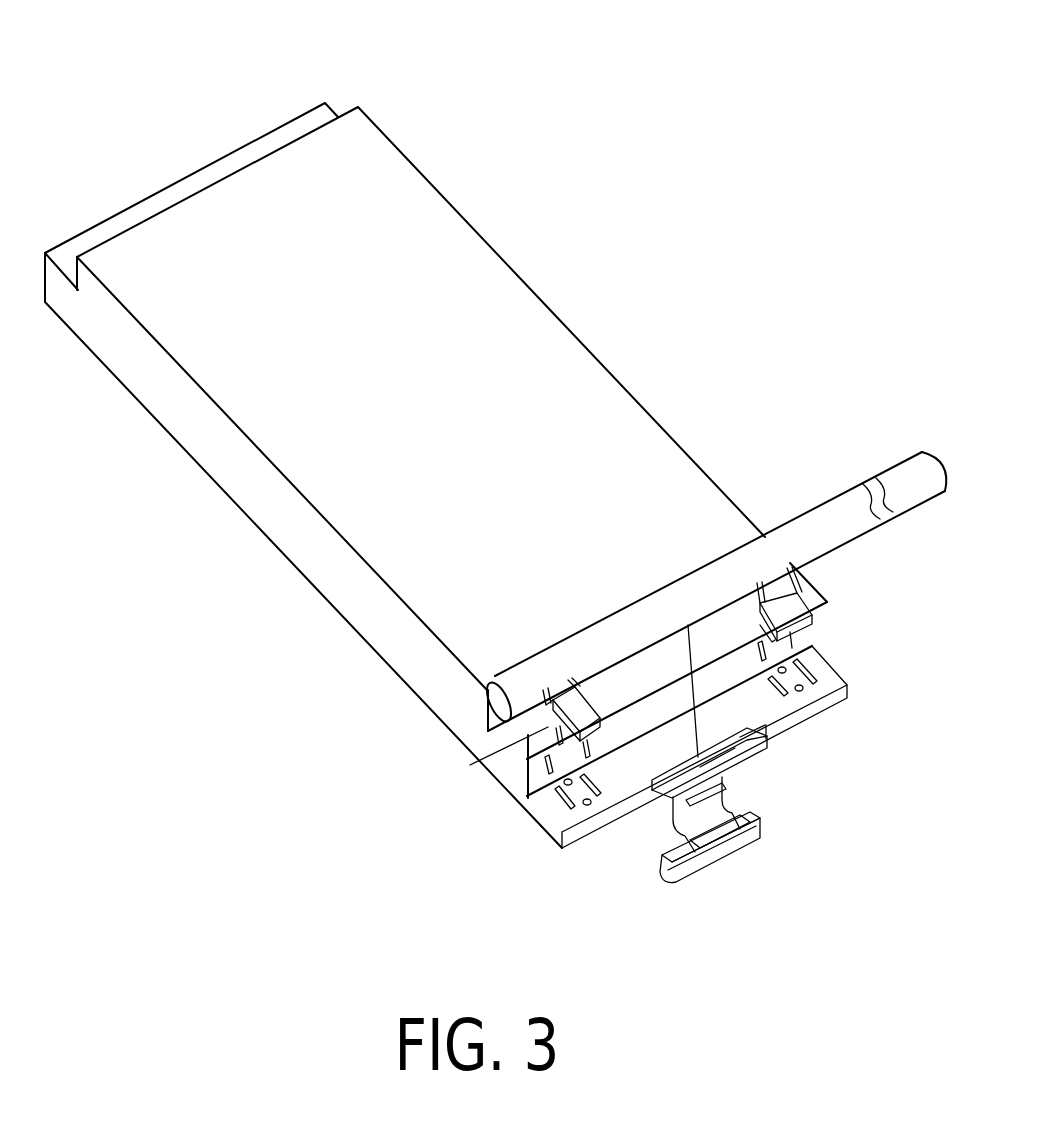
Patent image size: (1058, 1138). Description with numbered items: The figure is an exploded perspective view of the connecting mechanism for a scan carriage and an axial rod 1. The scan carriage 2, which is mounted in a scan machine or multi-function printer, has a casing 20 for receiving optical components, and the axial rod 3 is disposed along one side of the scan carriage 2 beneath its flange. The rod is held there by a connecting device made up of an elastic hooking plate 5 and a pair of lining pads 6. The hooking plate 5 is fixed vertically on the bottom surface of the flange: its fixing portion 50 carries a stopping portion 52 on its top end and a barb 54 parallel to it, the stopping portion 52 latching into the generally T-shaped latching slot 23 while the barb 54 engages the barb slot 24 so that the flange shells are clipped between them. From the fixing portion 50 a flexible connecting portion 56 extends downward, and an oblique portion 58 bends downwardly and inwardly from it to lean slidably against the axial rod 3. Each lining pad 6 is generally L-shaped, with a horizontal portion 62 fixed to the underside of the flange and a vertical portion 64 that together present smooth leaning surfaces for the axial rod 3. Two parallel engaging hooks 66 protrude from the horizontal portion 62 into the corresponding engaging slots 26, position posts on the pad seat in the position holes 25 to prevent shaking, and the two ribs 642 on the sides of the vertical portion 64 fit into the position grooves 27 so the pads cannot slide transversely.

The connecting mechanism for a scan carriage and an axial rod 1 is at (661, 43).
The scan carriage 2 is at (608, 340).
The casing 20 is at (300, 538).
The axial rod 3 is at (897, 470).
The elastic hooking plate 5 is at (708, 890).
The fixing portion 50 is at (850, 888).
The stopping portion 52 is at (700, 871).
The barb 54 is at (732, 861).
The flexible connecting portion 56 is at (750, 843).
The oblique portion 58 is at (718, 801).
The lining pad 6 is at (815, 599).
The horizontal portion 62 is at (551, 735).
The vertical portion 64 is at (540, 745).
The rib 642 is at (548, 712).
The engaging hook 66 is at (525, 768).
The latching slot 23 is at (770, 741).
The barb slot 24 is at (738, 771).
The position hole 25 is at (786, 672).
The engaging slot 26 is at (808, 668).
The position groove 27 is at (768, 650).